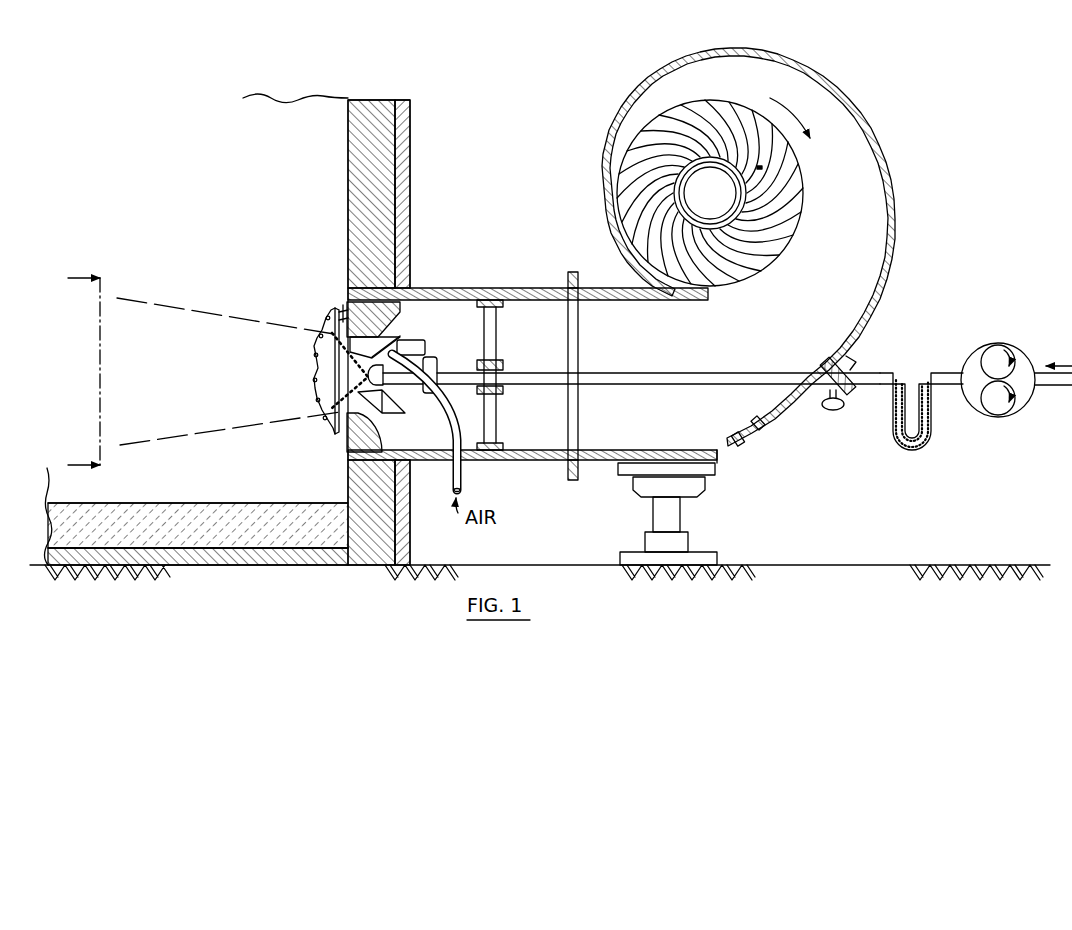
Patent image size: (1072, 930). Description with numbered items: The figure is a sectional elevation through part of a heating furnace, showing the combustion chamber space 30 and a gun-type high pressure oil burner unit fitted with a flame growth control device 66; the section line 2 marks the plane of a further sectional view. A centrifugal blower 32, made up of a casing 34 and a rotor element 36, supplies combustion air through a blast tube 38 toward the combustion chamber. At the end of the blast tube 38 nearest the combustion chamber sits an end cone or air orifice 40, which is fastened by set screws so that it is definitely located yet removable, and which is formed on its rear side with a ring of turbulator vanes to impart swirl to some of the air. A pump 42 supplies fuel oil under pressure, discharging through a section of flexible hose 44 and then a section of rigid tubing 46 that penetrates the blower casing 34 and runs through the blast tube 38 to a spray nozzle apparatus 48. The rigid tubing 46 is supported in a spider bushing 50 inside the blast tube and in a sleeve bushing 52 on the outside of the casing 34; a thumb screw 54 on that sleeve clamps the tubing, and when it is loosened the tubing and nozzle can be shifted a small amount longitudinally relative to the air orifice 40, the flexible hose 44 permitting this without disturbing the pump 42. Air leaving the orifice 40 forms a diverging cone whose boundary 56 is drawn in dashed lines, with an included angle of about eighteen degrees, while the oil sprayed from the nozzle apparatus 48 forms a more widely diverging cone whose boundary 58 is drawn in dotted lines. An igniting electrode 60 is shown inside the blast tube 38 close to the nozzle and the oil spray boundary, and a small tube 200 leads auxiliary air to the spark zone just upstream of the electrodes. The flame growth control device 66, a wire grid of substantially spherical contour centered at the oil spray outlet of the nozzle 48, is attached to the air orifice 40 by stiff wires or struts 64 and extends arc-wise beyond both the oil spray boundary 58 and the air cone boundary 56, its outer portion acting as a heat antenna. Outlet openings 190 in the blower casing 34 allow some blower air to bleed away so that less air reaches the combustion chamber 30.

The section line 2- 2 is at (75, 372).
The combustion chamber 30 is at (251, 176).
The centrifugal blower 32 is at (741, 247).
The blower casing 34 is at (897, 162).
The rotor element 36 is at (802, 220).
The blast tube 38 is at (449, 289).
The air orifice 40 is at (348, 440).
The pump 42 is at (986, 344).
The flexible hose 44 is at (932, 439).
The rigid tubing 46 is at (648, 372).
The spray nozzle apparatus 48 is at (445, 362).
The spider bushing 50 is at (497, 343).
The sleeve bushing 52 is at (849, 368).
The thumb screw 54 is at (832, 412).
The air cone boundary 56 is at (205, 312).
The oil spray cone boundary 58 is at (318, 410).
The igniting electrode 60 is at (414, 343).
The struts 64 is at (343, 312).
The flame growth control device 66 is at (313, 357).
The outlet openings 190 is at (759, 426).
The auxiliary air tube 200 is at (436, 401).